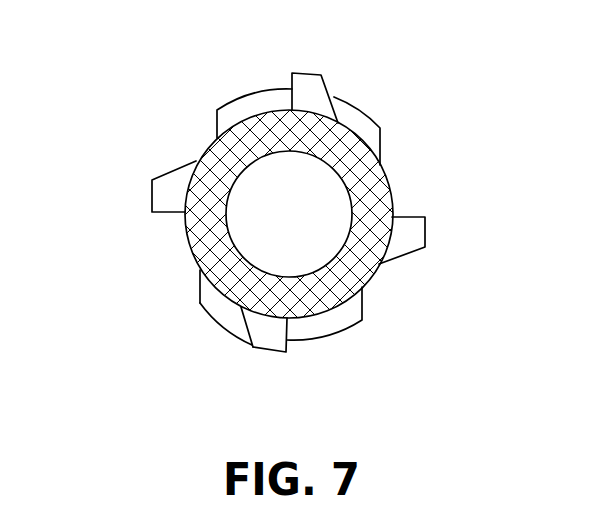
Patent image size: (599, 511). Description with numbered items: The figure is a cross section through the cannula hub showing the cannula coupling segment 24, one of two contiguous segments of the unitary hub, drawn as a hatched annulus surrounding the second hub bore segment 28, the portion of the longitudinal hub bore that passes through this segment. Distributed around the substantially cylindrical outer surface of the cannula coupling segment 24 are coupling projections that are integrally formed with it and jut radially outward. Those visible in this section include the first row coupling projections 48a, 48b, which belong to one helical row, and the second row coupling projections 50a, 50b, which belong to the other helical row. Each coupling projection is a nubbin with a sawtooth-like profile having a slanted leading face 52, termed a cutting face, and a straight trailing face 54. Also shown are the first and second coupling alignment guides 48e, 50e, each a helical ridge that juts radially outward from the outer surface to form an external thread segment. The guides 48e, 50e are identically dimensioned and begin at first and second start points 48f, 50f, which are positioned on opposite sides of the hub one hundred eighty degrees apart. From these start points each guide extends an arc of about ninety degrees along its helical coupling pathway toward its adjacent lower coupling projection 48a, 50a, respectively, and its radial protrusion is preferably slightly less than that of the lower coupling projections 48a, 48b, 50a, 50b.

The cannula coupling segment 24 is at (370, 280).
The second hub bore segment 28 is at (306, 207).
The first row coupling projection 48a is at (425, 230).
The first row coupling projection 48b is at (310, 72).
The first coupling alignment guide 48e is at (223, 322).
The first start point 48f is at (200, 285).
The second row coupling projection 50a is at (152, 197).
The second row coupling projection 50b is at (270, 353).
The second coupling alignment guide 50e is at (237, 100).
The second start point 50f is at (380, 138).
The slanted leading face 52 is at (250, 345).
The straight trailing face 54 is at (287, 350).